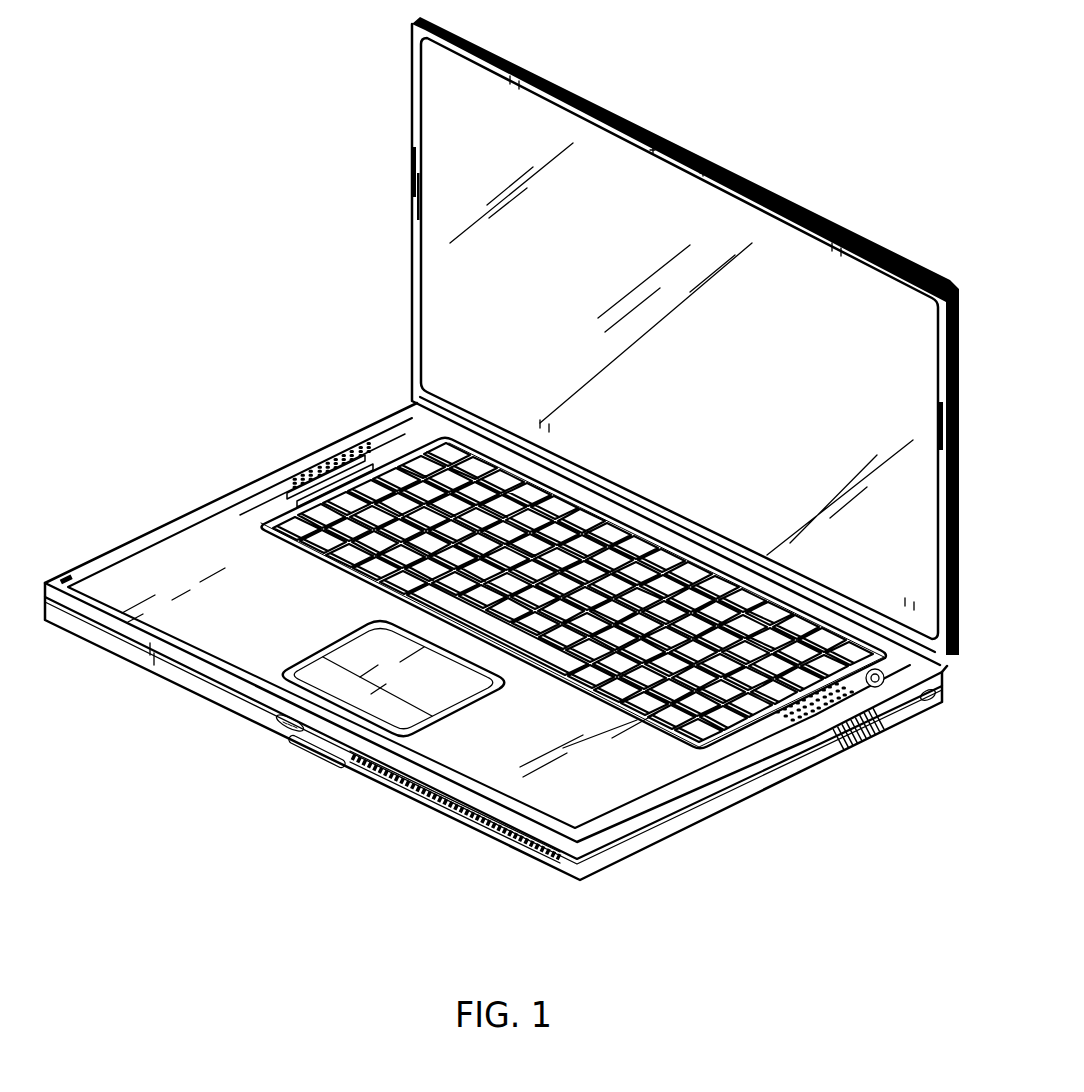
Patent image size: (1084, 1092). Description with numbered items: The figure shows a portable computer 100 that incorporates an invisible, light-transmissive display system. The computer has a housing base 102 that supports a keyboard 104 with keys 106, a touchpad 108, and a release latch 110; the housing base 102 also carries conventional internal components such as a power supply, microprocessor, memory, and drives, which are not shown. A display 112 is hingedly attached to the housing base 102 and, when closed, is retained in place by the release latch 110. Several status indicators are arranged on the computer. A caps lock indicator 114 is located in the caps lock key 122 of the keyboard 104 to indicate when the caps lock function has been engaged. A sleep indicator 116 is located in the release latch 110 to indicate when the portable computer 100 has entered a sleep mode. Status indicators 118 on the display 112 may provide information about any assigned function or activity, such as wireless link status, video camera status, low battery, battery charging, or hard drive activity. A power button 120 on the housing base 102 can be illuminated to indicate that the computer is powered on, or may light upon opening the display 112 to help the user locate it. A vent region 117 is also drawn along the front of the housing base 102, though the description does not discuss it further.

The portable computer 100 is at (280, 160).
The housing base 102 is at (160, 526).
The keyboard 104 is at (413, 453).
The keys 106 is at (293, 542).
The touchpad 108 is at (347, 643).
The release latch 110 is at (323, 740).
The display 112 is at (408, 310).
The caps lock indicator 114 is at (358, 484).
The sleep indicator 116 is at (283, 733).
The vent 117 is at (452, 800).
The status indicators 118 is at (667, 141).
The power button 120 is at (918, 699).
The caps lock key 122 is at (300, 512).